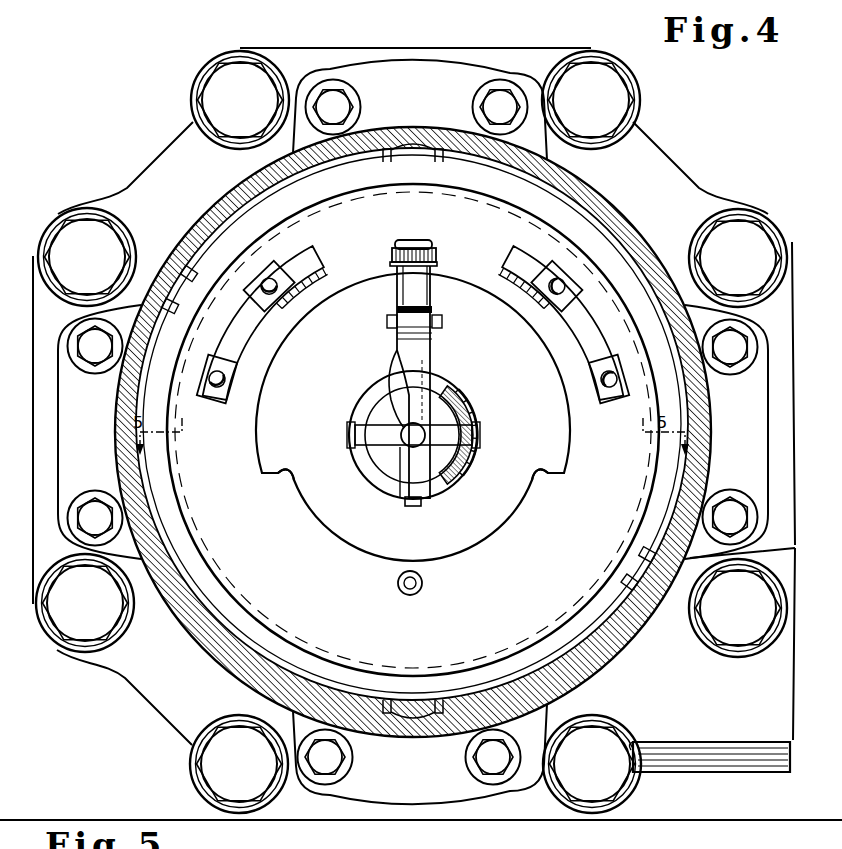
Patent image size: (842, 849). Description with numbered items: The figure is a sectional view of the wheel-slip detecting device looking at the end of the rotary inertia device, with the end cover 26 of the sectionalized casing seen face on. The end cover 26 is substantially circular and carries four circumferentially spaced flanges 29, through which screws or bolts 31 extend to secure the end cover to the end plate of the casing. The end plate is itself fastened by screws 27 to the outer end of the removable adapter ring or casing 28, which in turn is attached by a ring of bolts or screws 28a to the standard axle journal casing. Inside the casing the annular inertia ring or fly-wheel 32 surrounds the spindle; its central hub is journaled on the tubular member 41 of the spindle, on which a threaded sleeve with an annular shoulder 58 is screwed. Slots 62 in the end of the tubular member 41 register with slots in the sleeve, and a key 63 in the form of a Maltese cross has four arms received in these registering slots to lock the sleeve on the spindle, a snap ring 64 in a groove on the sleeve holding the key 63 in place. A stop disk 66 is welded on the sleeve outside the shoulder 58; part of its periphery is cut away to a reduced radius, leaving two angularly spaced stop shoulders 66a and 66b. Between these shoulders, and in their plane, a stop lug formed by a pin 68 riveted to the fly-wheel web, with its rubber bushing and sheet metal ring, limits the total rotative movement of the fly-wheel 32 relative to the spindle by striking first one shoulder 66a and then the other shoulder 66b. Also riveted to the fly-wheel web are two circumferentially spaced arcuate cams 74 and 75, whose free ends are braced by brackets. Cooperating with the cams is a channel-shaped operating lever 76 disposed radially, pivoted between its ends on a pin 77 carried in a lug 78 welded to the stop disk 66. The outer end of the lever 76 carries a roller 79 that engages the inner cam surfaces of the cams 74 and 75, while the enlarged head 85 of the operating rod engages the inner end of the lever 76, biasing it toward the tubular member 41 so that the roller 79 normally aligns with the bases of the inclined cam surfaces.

The end cover 26 is at (614, 650).
The screws 27 is at (415, 158).
The adapter ring 28 is at (128, 200).
The bolts 28a is at (238, 118).
The flanges 29 is at (400, 72).
The screws 31 is at (498, 103).
The fly-wheel 32 is at (492, 686).
The tubular member 41 is at (444, 415).
The annular shoulder 58 is at (387, 384).
The slots 62 is at (416, 495).
The key 63 is at (413, 472).
The snap ring 64 is at (468, 457).
The stop disk 66 is at (262, 450).
The stop shoulder 66a is at (276, 478).
The stop shoulder 66b is at (552, 478).
The pin 68 is at (398, 583).
The arcuate cam 74 is at (337, 266).
The arcuate cam 75 is at (496, 268).
The operating lever 76 is at (434, 352).
The pin 77 is at (438, 319).
The lug 78 is at (397, 309).
The roller 79 is at (456, 231).
The head 85 is at (411, 428).